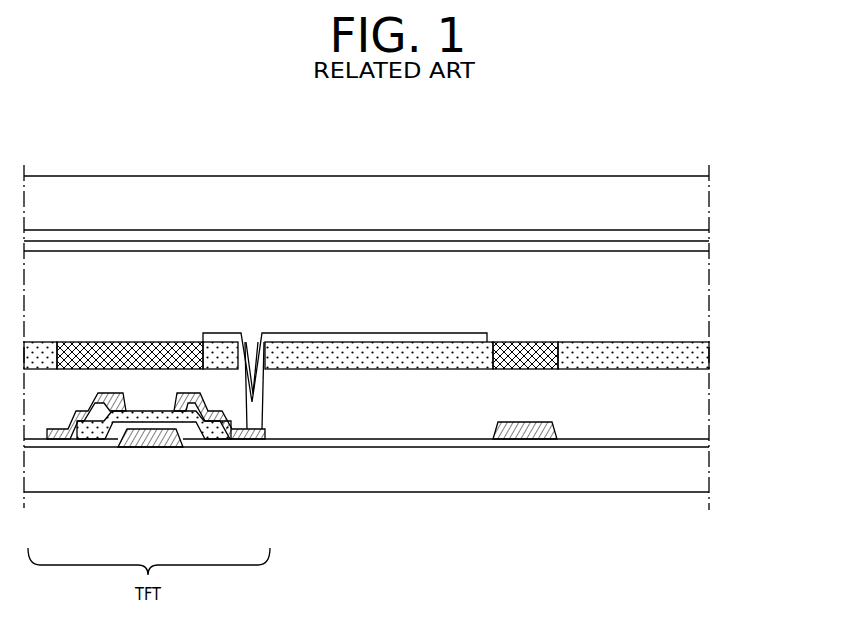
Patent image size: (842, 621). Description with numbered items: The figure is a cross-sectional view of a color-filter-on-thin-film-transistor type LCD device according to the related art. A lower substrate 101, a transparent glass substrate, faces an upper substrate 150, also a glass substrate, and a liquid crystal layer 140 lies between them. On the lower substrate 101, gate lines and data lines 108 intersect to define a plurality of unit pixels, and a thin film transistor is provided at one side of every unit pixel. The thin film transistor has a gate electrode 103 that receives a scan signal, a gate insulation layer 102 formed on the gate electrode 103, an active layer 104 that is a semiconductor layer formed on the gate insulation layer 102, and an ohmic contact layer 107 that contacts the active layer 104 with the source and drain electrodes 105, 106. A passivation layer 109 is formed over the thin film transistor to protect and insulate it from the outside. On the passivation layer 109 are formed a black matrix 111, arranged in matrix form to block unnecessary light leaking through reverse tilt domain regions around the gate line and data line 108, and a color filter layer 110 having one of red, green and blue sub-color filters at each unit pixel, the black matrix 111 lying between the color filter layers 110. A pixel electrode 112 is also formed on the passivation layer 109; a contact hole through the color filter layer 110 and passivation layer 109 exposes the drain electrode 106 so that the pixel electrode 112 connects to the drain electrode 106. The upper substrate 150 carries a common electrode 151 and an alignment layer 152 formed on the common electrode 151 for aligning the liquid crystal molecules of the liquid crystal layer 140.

The lower substrate 101 is at (693, 477).
The gate insulation layer 102 is at (693, 441).
The gate electrode 103 is at (148, 447).
The active layer 104 is at (89, 439).
The source electrode 105 is at (53, 439).
The drain electrode 106 is at (247, 447).
The ohmic contact layer 107 is at (205, 439).
The data line 108 is at (523, 439).
The passivation layer 109 is at (693, 401).
The color filter layer 110 is at (383, 365).
The black matrix 111 is at (127, 352).
The pixel electrode 112 is at (420, 333).
The liquid crystal layer 140 is at (693, 312).
The upper substrate 150 is at (693, 198).
The common electrode 151 is at (693, 237).
The alignment layer 152 is at (693, 247).